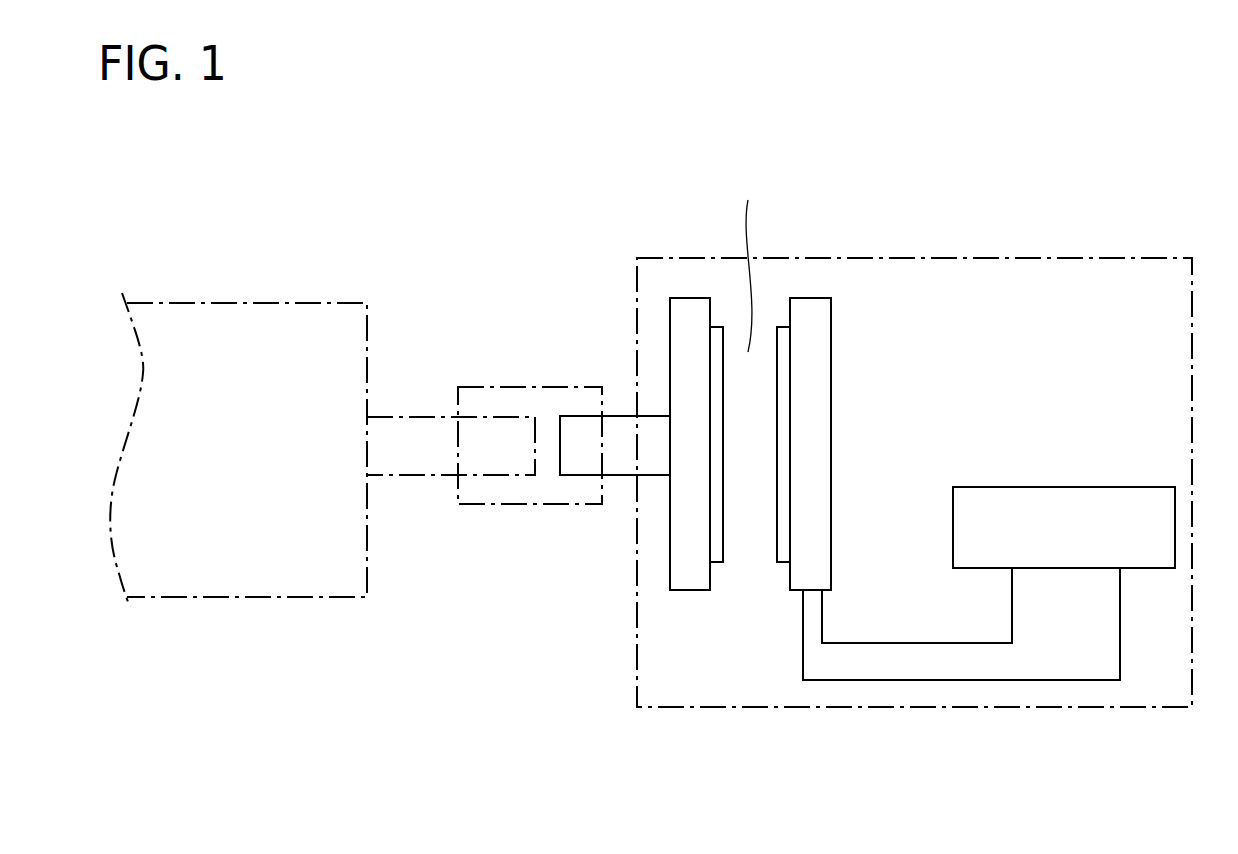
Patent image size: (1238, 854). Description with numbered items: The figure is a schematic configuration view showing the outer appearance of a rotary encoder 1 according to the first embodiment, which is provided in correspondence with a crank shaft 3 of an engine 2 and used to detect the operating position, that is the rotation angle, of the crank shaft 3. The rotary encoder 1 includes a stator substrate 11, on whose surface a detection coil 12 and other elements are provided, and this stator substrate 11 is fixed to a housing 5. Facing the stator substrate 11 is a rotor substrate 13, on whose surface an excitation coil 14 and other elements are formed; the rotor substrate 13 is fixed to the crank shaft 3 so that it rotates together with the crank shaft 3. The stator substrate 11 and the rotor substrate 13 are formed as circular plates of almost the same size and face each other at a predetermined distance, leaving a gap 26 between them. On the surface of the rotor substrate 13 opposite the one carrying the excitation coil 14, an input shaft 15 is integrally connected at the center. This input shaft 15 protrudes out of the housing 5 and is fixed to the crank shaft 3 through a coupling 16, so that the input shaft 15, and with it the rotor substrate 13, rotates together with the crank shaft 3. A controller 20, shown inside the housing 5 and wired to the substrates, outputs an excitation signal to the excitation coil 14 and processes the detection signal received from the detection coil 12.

The rotary encoder 1 is at (1014, 225).
The engine 2 is at (216, 303).
The crank shaft 3 is at (395, 417).
The housing 5 is at (1130, 258).
The stator substrate 11 is at (805, 306).
The detection coil 12 is at (781, 328).
The rotor substrate 13 is at (690, 298).
The excitation coil 14 is at (717, 328).
The input shaft 15 is at (575, 477).
The coupling 16 is at (512, 387).
The controller 20 is at (1030, 487).
The gap 26 is at (750, 263).